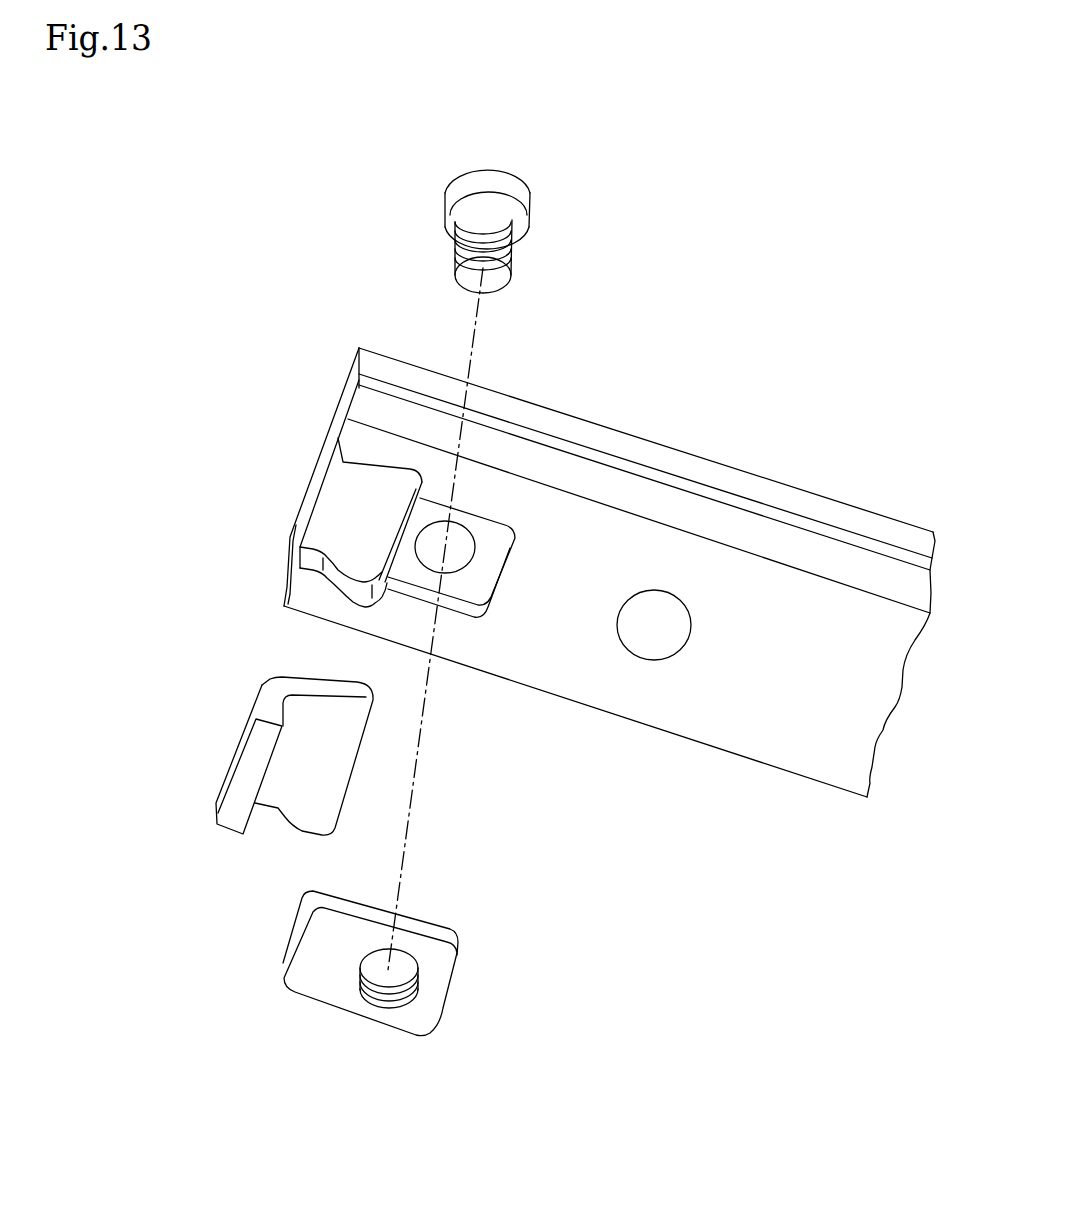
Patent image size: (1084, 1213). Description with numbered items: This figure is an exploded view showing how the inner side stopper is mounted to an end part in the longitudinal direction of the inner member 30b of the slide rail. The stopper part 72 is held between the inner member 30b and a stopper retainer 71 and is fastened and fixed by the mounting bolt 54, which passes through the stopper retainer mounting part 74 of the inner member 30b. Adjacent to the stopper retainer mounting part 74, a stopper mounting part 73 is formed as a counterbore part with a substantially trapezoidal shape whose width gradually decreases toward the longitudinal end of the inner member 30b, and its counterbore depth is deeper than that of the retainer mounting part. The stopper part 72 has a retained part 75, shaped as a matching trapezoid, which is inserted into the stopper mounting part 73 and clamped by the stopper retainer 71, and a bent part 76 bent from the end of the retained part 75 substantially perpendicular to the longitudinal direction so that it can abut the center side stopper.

The mounting bolt 54 is at (522, 199).
The inner member 30b is at (865, 735).
The stopper mounting part 73 is at (337, 508).
The stopper retainer mounting part 74 is at (482, 578).
The stopper part 72 is at (218, 728).
The retained part 75 is at (320, 732).
The bent part 76 is at (237, 762).
The stopper retainer 71 is at (323, 987).